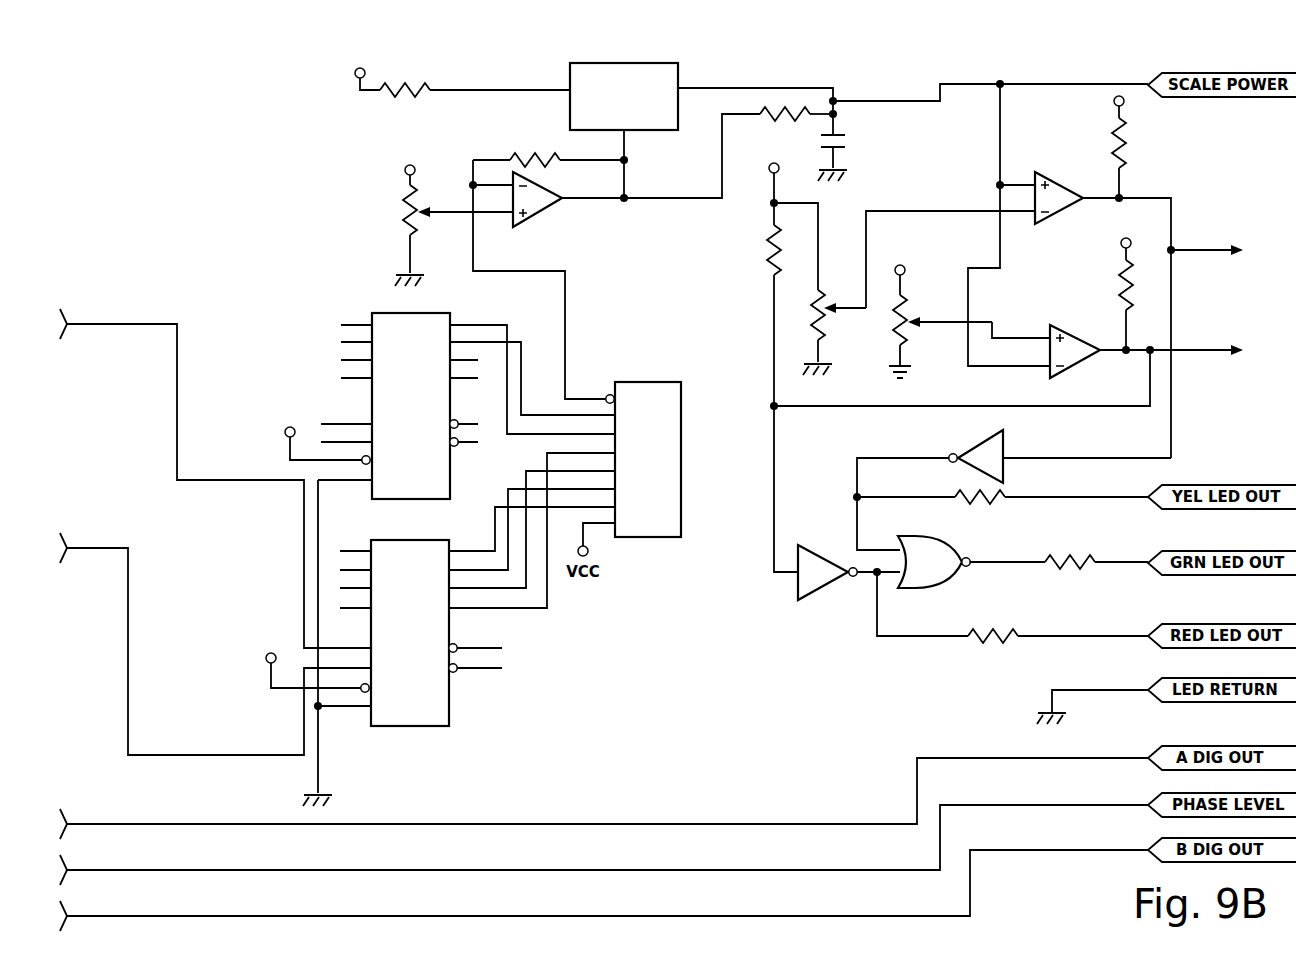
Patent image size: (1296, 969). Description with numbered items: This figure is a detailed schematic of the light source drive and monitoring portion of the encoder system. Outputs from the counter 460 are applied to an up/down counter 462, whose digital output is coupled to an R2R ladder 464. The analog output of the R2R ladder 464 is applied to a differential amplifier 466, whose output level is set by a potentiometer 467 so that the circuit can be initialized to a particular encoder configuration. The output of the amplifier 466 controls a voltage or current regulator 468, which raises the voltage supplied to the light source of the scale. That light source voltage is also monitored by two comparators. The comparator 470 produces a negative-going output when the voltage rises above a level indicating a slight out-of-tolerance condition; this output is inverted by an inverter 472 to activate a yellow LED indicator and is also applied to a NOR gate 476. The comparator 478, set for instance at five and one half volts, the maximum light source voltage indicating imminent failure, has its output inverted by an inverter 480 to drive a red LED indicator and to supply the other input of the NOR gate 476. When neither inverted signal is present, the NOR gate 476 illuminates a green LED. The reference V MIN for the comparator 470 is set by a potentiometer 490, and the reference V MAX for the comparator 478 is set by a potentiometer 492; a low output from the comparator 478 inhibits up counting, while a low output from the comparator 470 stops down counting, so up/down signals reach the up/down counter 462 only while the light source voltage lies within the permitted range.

The counter 460 is at (420, 313).
The up/down counter 462 is at (449, 716).
The R2R ladder 464 is at (681, 390).
The differential amplifier 466 is at (535, 216).
The potentiometer 467 is at (772, 240).
The voltage or current regulator 468 is at (645, 131).
The comparator 470 is at (1063, 183).
The inverter 472 is at (1005, 441).
The NOR gate 476 is at (930, 590).
The comparator 478 is at (1078, 338).
The inverter 480 is at (812, 600).
The potentiometer 490 is at (828, 312).
The potentiometer 492 is at (908, 333).